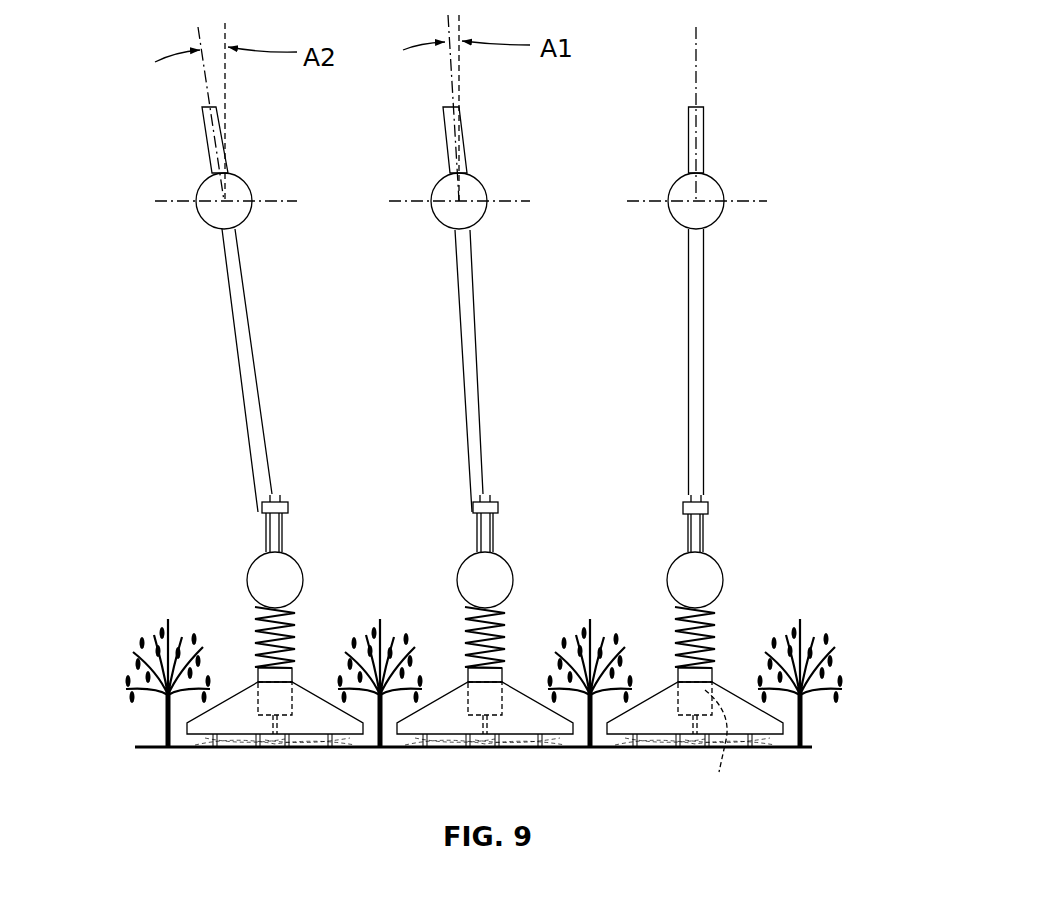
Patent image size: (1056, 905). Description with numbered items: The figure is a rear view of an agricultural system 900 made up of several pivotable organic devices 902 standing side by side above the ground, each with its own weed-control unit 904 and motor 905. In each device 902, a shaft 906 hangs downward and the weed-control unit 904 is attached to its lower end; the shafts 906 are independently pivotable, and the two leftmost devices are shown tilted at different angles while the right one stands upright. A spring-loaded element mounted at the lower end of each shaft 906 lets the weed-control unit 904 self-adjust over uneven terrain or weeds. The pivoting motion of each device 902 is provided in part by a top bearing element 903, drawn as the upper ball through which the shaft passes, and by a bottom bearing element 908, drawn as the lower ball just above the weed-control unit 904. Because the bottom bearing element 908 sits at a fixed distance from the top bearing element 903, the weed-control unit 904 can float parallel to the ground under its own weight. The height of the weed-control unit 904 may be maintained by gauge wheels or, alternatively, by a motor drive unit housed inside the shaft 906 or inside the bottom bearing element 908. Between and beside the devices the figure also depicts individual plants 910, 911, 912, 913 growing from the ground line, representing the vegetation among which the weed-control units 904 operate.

The agricultural system 900 is at (918, 95).
The pivotable organic device 902 is at (703, 168).
The top bearing element 903 is at (718, 183).
The weed-control unit 904 is at (715, 637).
The motor 905 is at (485, 742).
The shaft 906 is at (705, 352).
The bottom bearing element 908 is at (718, 565).
The plant 910 is at (158, 655).
The plant 911 is at (390, 625).
The plant 912 is at (603, 617).
The plant 913 is at (812, 630).